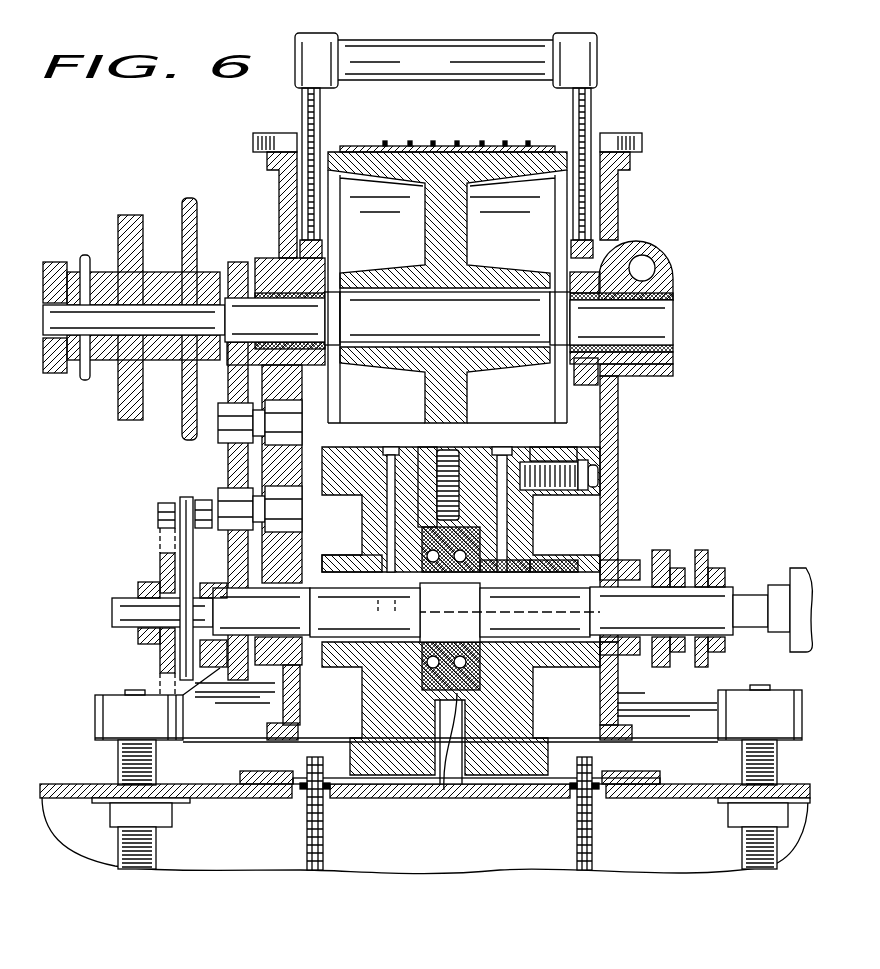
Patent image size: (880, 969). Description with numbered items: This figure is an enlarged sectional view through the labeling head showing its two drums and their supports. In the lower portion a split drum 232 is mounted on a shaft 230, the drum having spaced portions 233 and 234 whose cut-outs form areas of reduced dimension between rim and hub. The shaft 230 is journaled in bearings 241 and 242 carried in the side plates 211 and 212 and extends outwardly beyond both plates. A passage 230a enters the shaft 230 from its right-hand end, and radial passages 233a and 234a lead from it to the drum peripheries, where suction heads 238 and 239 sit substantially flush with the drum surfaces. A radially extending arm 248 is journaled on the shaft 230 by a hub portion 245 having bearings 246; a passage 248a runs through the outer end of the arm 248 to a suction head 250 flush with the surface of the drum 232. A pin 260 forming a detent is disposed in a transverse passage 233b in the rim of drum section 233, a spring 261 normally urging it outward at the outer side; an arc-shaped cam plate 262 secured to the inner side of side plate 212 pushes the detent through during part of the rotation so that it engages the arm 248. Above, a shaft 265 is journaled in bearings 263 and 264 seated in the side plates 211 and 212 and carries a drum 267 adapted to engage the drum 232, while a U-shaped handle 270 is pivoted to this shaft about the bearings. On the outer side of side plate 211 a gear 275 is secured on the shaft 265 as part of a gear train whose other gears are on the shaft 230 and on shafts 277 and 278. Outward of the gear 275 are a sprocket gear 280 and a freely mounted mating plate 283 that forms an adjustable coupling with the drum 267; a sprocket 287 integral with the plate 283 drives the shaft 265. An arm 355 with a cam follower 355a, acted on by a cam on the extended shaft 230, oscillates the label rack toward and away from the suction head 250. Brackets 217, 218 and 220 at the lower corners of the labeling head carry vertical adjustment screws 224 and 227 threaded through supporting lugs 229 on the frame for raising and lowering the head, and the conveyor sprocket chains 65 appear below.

The U-shaped handle 270 is at (490, 55).
The drum 267 is at (550, 160).
The mating plate 283 is at (125, 215).
The sprocket gear 280 is at (187, 197).
The side plate 211 is at (280, 190).
The side plate 212 is at (607, 213).
The bearing 263 is at (270, 262).
The gear 275 is at (240, 262).
The bearing 264 is at (672, 282).
The shaft 265 is at (655, 318).
The sprocket 287 is at (83, 380).
The shaft 278 is at (232, 425).
The shaft 277 is at (220, 490).
The radially extending arm 248 is at (415, 470).
The passage 248a is at (433, 450).
The suction head 250 is at (452, 447).
The suction head 239 is at (392, 447).
The suction head 238 is at (500, 447).
The pin 260 is at (573, 447).
The spring 261 is at (588, 462).
The cam plate 262 is at (598, 480).
The passage 233b is at (533, 498).
The radial passage 233a is at (508, 573).
The bearing 242 is at (643, 580).
The radial passage 234a is at (392, 552).
The passage 230a is at (382, 607).
The shaft 230 is at (570, 605).
The bearings 246 is at (444, 655).
The drum 232 is at (540, 715).
The bearing 241 is at (160, 583).
The arm 355 is at (182, 546).
The cam follower 355a is at (158, 514).
The bracket 217 is at (95, 720).
The bracket 218 is at (755, 705).
The bracket 220 is at (425, 777).
The vertical adjustment screw 224 is at (118, 762).
The vertical adjustment screw 227 is at (777, 778).
The supporting lug 229 is at (113, 808).
The drum portion 233 is at (527, 790).
The drum portion 234 is at (370, 790).
The hub portion 245 is at (448, 790).
The sprocket chains 65 is at (325, 856).